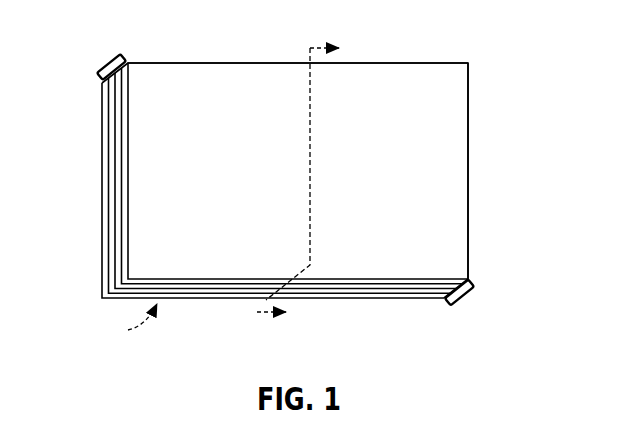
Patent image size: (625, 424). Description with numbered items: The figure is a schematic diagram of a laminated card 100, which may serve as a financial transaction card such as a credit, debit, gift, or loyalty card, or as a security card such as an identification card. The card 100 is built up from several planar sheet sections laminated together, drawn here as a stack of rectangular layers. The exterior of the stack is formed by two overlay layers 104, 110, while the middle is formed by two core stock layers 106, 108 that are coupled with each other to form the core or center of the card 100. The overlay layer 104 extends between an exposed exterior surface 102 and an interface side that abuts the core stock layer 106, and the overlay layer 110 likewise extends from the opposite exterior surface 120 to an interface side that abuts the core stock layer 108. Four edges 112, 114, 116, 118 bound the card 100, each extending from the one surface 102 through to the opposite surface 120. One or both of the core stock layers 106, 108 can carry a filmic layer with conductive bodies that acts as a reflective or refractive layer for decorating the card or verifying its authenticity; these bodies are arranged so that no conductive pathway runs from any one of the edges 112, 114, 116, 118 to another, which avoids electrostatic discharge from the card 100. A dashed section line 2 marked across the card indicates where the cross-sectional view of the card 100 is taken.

The laminated card 100 is at (491, 49).
The exterior surface 102 is at (448, 164).
The overlay layer 104 is at (415, 284).
The core stock layer 106 is at (352, 288).
The core stock layer 108 is at (253, 293).
The overlay layer 110 is at (200, 298).
The edge 112 is at (108, 66).
The edge 114 is at (466, 295).
The edge 116 is at (471, 196).
The edge 118 is at (181, 62).
The exterior surface 120 is at (120, 322).
The section line 2- 2 is at (307, 181).